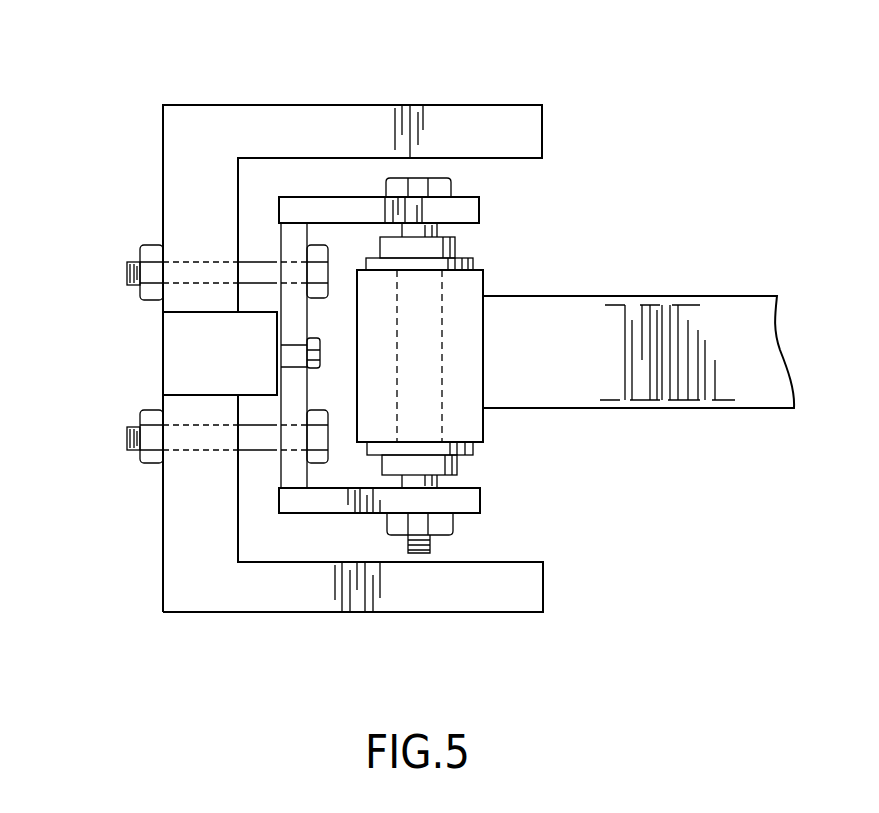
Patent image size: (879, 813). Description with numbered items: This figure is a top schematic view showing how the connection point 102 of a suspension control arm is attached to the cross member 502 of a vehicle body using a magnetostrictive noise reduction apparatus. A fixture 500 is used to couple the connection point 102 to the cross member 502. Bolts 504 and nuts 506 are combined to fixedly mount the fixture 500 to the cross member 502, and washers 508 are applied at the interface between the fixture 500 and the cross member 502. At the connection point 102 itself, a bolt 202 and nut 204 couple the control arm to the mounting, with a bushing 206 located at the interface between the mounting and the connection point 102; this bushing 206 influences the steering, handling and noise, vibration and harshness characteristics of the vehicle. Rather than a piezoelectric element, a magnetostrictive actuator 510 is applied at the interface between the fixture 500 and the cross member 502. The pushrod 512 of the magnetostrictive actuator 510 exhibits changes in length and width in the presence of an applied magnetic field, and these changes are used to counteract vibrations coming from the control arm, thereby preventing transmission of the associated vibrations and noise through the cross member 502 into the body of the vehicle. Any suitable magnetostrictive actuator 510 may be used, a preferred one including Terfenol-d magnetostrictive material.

The connection point 102 is at (484, 424).
The bolt 202 is at (450, 184).
The nut 204 is at (453, 523).
The bushing 206 is at (467, 448).
The fixture 500 is at (360, 513).
The cross member 502 is at (537, 603).
The bolts 504 is at (317, 242).
The nuts 506 is at (150, 293).
The washers 508 is at (258, 261).
The magnetostrictive actuator 510 is at (172, 367).
The pushrod 512 is at (292, 340).